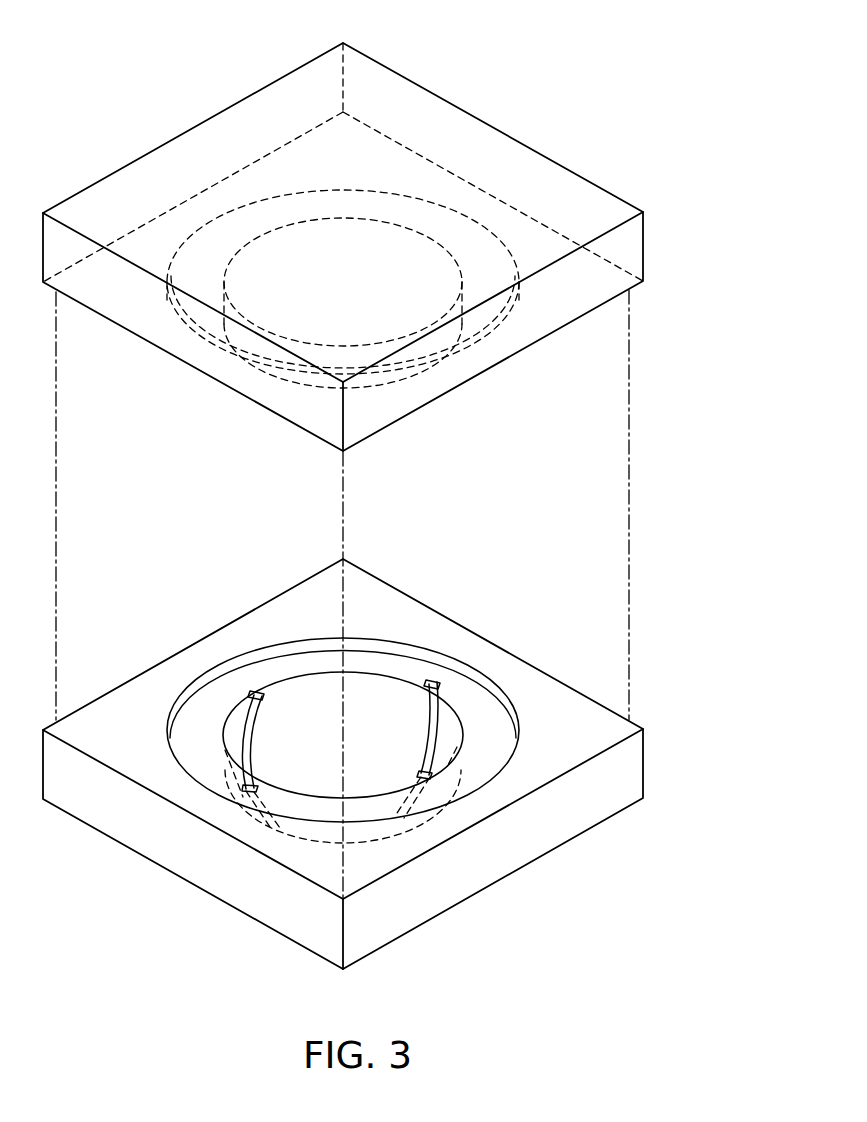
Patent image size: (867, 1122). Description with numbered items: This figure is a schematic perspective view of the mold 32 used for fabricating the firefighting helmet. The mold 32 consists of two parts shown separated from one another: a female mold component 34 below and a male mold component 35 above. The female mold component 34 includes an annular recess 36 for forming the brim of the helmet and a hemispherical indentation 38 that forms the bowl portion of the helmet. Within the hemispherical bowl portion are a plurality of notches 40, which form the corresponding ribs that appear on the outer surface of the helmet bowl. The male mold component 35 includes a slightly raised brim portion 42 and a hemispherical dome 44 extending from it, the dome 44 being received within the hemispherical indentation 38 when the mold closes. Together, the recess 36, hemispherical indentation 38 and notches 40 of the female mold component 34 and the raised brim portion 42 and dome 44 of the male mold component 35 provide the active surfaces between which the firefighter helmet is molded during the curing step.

The mold 32 is at (626, 63).
The female mold component 34 is at (645, 742).
The male mold component 35 is at (645, 257).
The annular recess 36 is at (493, 683).
The hemispherical indentation 38 is at (307, 695).
The notches 40 is at (257, 692).
The raised brim portion 42 is at (350, 196).
The hemispherical dome 44 is at (304, 387).